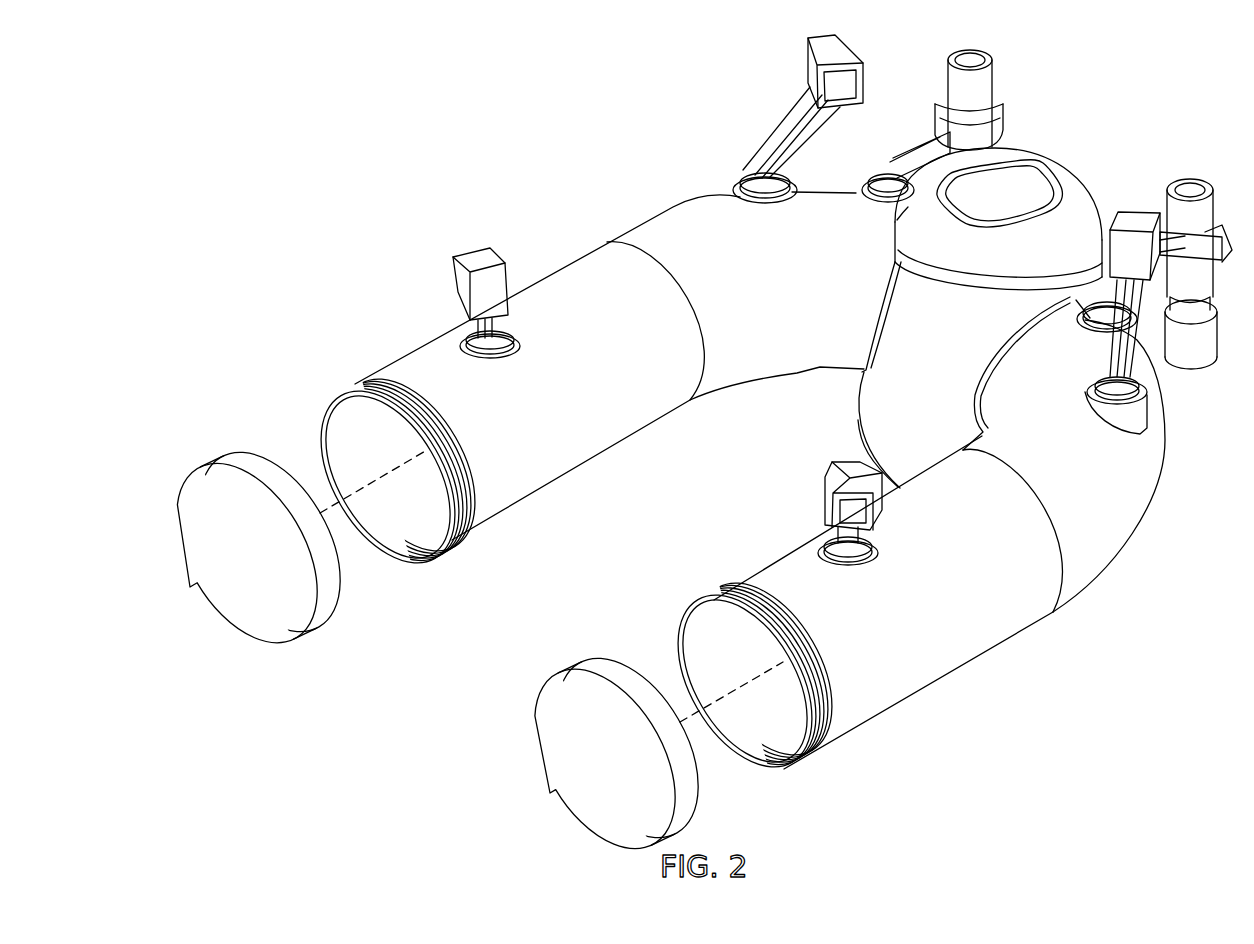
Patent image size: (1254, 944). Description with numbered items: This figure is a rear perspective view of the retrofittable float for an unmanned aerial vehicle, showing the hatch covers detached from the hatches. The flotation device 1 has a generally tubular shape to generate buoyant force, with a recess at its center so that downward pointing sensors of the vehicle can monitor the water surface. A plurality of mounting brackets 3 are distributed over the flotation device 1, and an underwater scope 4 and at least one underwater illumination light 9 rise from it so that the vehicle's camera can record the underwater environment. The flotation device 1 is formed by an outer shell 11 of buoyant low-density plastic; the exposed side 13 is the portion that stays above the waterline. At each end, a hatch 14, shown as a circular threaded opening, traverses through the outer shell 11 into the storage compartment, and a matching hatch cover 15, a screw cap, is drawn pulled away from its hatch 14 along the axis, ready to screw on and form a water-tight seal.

The flotation device 1 is at (1043, 636).
The mounting brackets 3 is at (813, 70).
The underwater scope 4 is at (1080, 187).
The underwater illumination light 9 is at (980, 92).
The outer shell 11 is at (912, 677).
The exposed side 13 is at (975, 519).
The hatch 14 is at (714, 635).
The hatch cover 15 is at (600, 672).